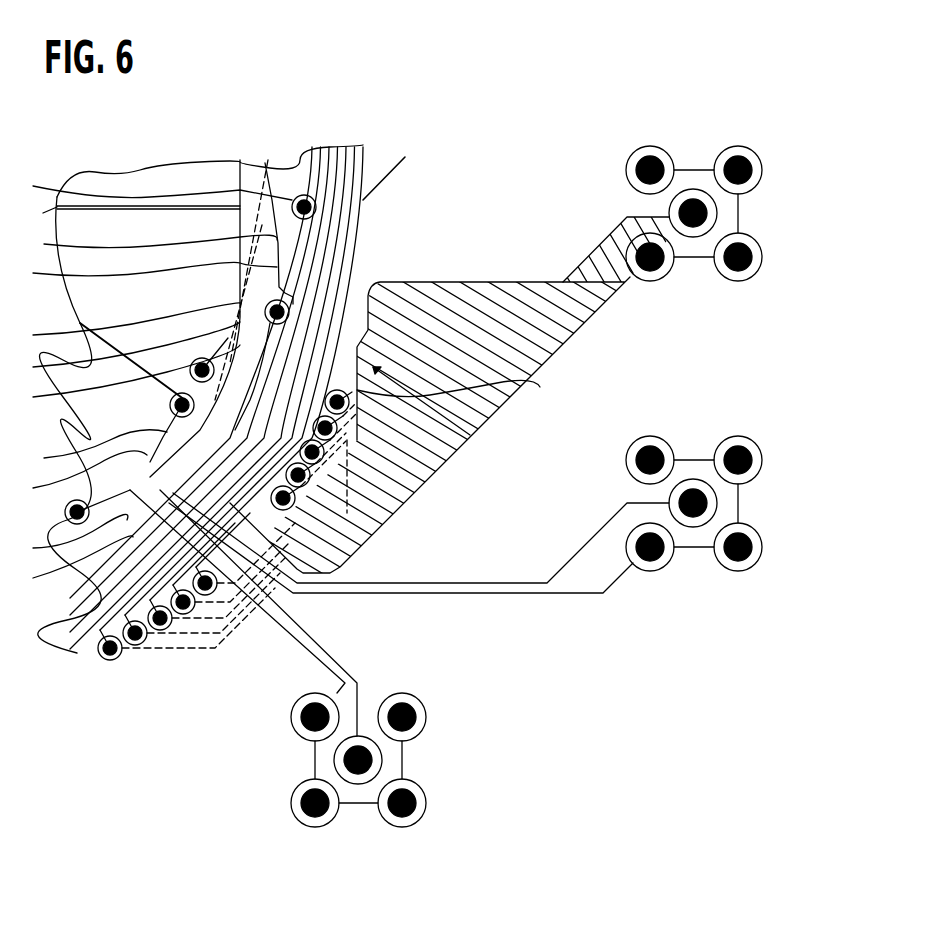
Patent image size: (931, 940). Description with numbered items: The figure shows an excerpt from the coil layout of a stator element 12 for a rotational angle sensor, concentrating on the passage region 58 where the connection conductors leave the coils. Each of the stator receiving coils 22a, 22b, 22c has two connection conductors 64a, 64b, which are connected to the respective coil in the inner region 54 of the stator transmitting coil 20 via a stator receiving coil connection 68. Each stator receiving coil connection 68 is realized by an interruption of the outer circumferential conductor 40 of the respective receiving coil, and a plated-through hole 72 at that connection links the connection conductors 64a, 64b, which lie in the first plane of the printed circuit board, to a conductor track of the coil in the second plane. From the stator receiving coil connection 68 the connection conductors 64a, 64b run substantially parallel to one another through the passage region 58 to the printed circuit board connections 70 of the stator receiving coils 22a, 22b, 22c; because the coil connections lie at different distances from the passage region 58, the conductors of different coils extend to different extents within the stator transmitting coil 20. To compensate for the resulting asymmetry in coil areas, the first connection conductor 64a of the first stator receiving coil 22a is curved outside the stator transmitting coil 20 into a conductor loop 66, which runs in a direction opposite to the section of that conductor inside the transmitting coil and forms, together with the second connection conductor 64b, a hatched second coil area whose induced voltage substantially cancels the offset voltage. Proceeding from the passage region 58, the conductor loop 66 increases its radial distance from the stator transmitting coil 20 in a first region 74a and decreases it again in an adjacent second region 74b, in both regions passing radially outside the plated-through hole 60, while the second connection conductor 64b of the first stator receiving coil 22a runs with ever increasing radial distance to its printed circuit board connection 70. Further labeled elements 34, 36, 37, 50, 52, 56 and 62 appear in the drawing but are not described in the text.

The stator element 12 is at (98, 721).
The stator transmitting coil 20 is at (381, 207).
The first stator receiving coil 22a is at (123, 215).
The stator receiving coil 22b is at (141, 245).
The stator receiving coil 22c is at (86, 450).
The bus bar 34 is at (382, 155).
The connector terminal 36 is at (541, 235).
The laminate layer 37 is at (149, 291).
The outer circumferential conductor 40 is at (141, 411).
The heating element trace 50 is at (365, 247).
The layered edge region 52 is at (69, 607).
The inner region 54 is at (92, 412).
The connection strip 56 is at (573, 418).
The passage region 58 is at (197, 668).
The plated-through hole 60 is at (480, 422).
The via pads 62 is at (387, 487).
The first connection conductor 64a is at (507, 280).
The second connection conductor 64b is at (470, 453).
The conductor loop 66 is at (386, 341).
The stator receiving coil connection 68 is at (123, 447).
The printed circuit board connection 70 is at (693, 135).
The plated-through hole 72 is at (255, 309).
The first region 74a is at (371, 460).
The second region 74b is at (510, 385).